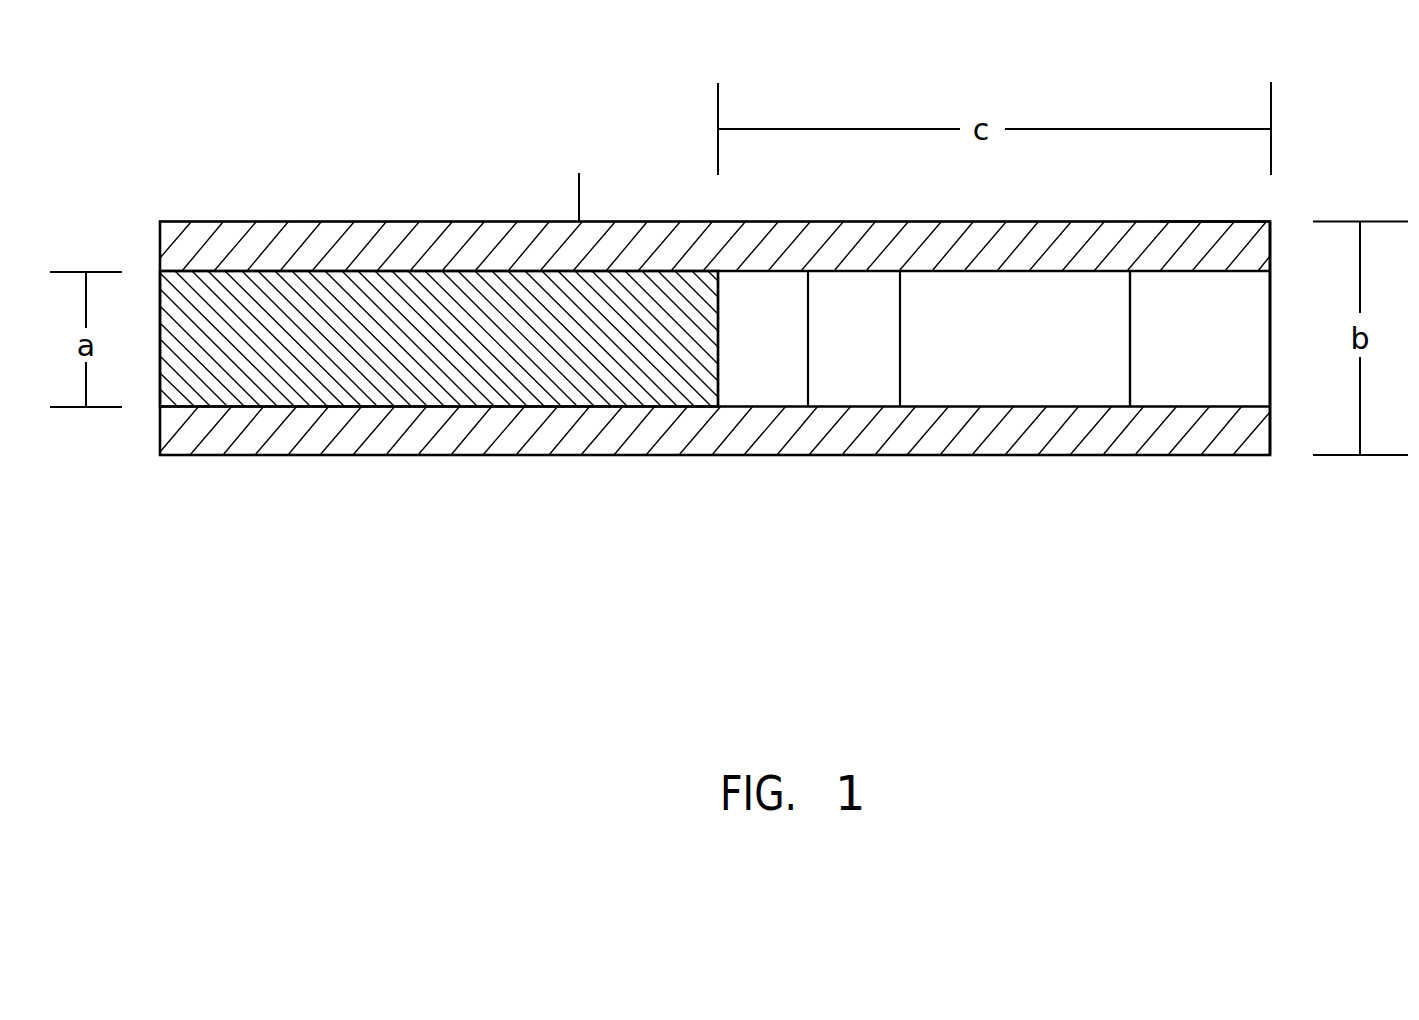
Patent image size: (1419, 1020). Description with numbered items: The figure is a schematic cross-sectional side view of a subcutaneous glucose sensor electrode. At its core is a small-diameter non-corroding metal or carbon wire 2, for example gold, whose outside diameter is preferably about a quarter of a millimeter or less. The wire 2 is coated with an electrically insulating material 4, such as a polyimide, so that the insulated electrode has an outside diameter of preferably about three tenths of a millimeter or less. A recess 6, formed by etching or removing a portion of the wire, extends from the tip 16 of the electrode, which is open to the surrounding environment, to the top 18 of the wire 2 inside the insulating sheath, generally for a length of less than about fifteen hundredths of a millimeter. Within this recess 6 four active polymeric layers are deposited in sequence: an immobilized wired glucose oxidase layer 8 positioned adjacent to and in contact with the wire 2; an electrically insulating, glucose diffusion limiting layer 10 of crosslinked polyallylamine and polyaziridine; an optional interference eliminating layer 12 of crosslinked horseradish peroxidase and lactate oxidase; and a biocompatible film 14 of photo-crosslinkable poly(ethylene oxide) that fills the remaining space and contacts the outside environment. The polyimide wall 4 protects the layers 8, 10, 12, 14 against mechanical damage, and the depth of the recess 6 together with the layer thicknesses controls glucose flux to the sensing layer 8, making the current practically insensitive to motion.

The metal or carbon wire 2 is at (158, 313).
The electrically insulating material 4 is at (322, 238).
The recess 6 is at (1270, 338).
The glucose oxidase layer 8 is at (760, 359).
The glucose diffusion limiting layer 10 is at (852, 360).
The interference eliminating layer 12 is at (993, 363).
The biocompatible film 14 is at (1186, 370).
The tip 16 is at (1272, 231).
The top of the wire 18 is at (720, 300).